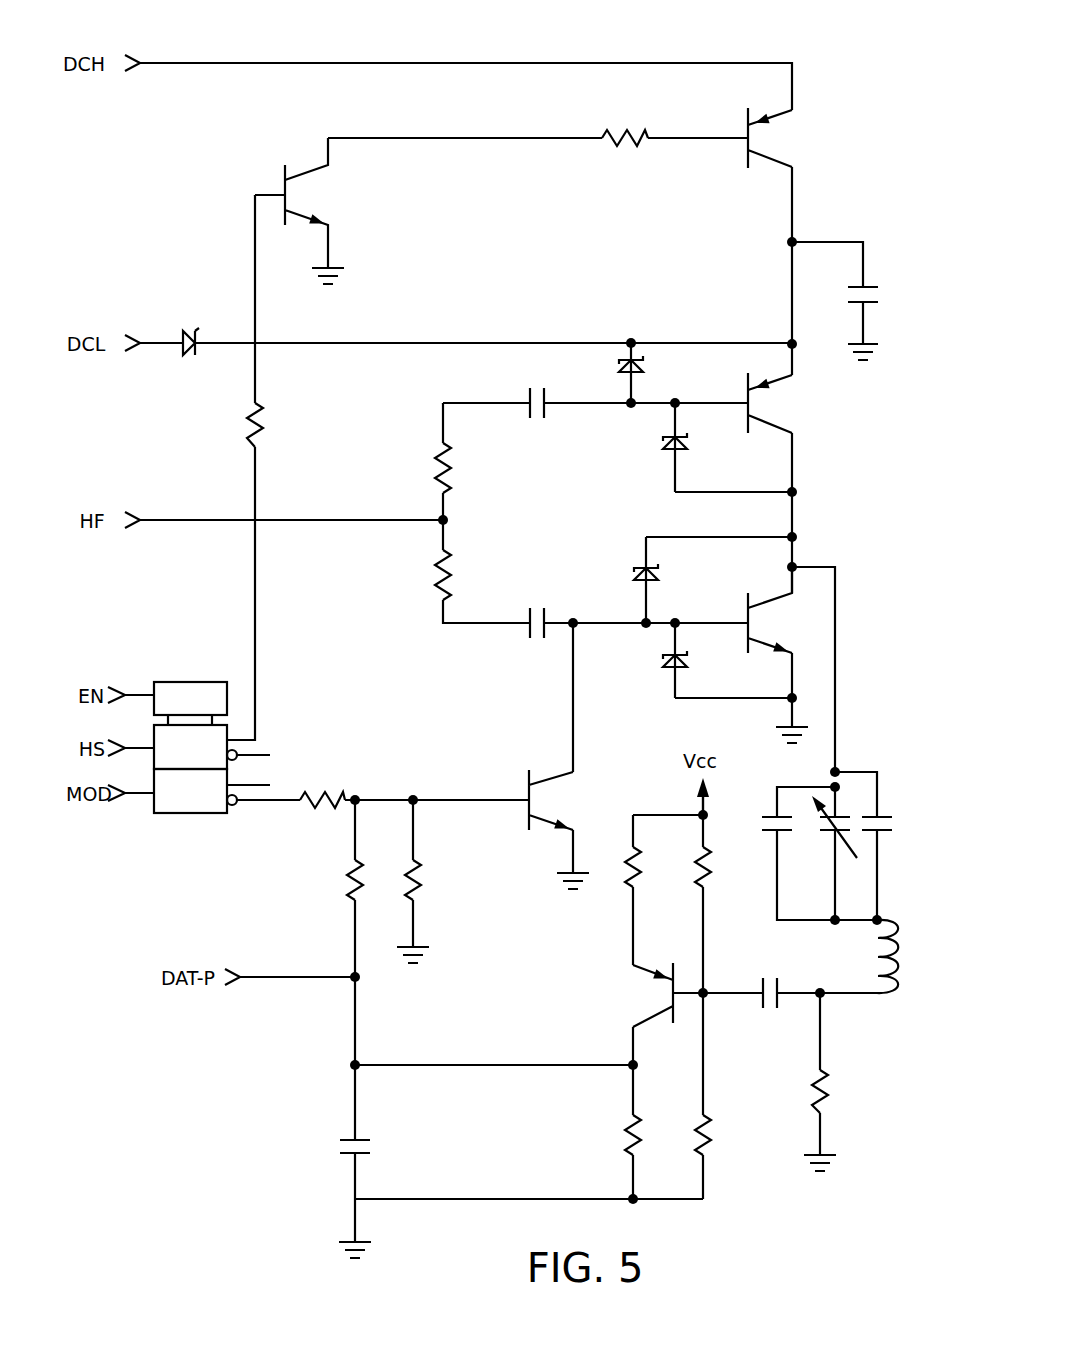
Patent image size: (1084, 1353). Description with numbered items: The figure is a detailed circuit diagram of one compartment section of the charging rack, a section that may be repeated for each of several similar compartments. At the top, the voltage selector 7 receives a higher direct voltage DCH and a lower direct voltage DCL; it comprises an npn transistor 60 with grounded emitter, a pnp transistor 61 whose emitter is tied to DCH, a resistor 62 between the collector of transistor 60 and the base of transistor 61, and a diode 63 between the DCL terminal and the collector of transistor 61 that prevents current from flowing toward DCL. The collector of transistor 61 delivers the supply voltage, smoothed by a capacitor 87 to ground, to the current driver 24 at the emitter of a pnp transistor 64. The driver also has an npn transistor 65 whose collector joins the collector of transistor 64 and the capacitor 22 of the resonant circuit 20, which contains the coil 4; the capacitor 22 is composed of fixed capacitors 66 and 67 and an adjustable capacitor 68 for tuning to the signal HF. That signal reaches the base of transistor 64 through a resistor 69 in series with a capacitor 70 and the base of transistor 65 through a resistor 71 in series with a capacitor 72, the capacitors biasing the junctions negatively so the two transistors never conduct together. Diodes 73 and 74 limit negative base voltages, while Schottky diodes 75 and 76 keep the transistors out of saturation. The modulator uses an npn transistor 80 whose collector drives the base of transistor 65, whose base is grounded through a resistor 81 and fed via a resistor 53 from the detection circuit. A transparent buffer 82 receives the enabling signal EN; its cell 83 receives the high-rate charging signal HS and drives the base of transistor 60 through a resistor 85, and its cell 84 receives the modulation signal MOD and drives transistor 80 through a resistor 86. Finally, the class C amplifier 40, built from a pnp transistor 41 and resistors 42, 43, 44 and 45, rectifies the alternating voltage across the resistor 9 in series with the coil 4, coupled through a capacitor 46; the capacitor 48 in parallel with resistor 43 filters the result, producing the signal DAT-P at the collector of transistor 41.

The coil 4 is at (893, 965).
The voltage selector 7 is at (488, 255).
The resistor 9 is at (827, 1085).
The resonant circuit 20 is at (858, 748).
The capacitor 22 is at (785, 893).
The current driver 24 is at (536, 527).
The class C amplifier 40 is at (672, 960).
The pnp transistor 41 is at (648, 975).
The resistor 42 is at (637, 878).
The resistor 43 is at (626, 1133).
The resistor 44 is at (707, 878).
The resistor 45 is at (710, 1128).
The capacitor 46 is at (780, 992).
The capacitor 48 is at (350, 1155).
The resistor 53 is at (348, 878).
The npn transistor 60 is at (284, 192).
The pnp transistor 61 is at (768, 122).
The resistor 62 is at (622, 130).
The diode 63 is at (193, 338).
The pnp transistor 64 is at (775, 425).
The npn transistor 65 is at (795, 657).
The capacitor 66 is at (770, 815).
The capacitor 67 is at (888, 833).
The adjustable capacitor 68 is at (854, 854).
The resistor 69 is at (452, 478).
The capacitor 70 is at (527, 395).
The resistor 71 is at (452, 578).
The capacitor 72 is at (528, 630).
The diode 73 is at (645, 366).
The diode 74 is at (662, 660).
The Schottky diode 75 is at (665, 442).
The Schottky diode 76 is at (635, 575).
The npn transistor 80 is at (527, 790).
The resistor 81 is at (420, 890).
The transparent buffer 82 is at (183, 682).
The cell 83 is at (162, 762).
The cell 84 is at (206, 815).
The resistor 85 is at (262, 415).
The resistor 86 is at (320, 792).
The capacitor 87 is at (870, 287).